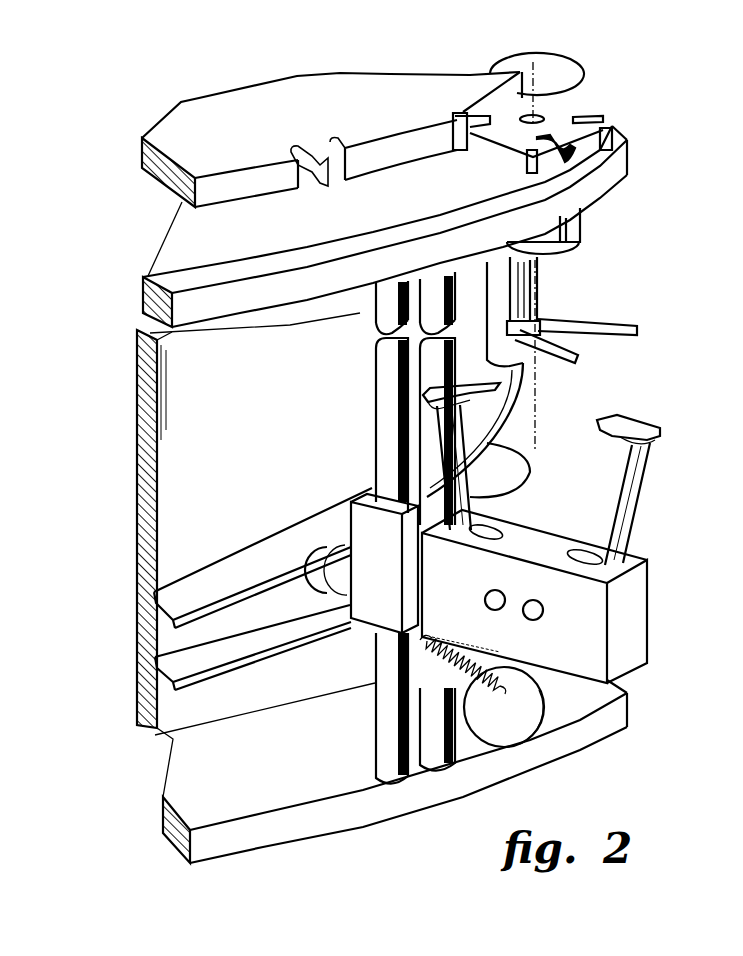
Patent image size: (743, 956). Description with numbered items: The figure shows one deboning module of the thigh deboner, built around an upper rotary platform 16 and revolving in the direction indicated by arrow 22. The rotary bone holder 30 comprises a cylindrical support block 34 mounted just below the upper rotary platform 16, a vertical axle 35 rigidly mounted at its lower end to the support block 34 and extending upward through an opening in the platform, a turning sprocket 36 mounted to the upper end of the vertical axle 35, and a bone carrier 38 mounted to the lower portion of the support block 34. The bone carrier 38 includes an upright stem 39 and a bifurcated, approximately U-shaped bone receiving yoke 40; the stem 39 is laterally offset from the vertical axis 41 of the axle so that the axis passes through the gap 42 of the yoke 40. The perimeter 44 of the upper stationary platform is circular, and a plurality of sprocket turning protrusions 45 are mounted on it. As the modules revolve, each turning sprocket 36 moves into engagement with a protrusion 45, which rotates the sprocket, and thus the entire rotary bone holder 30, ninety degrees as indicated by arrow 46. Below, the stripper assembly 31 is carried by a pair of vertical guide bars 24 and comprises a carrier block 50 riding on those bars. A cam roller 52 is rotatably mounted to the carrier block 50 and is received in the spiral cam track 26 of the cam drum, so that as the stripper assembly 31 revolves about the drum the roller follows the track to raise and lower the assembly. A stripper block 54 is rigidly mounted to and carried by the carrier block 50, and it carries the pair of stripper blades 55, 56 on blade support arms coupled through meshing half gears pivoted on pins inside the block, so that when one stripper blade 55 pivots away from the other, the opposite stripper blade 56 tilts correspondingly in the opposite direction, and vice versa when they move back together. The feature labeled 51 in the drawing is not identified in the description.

The upper rotary platform 16 is at (627, 170).
The arrow 22 is at (253, 373).
The vertical guide bars 24 is at (430, 407).
The spiral cam track 26 is at (200, 657).
The rotary bone holder 30 is at (584, 243).
The stripper assembly 31 is at (562, 482).
The cylindrical support block 34 is at (583, 220).
The vertical axle 35 is at (550, 107).
The turning sprocket 36 is at (490, 107).
The bone carrier 38 is at (552, 310).
The upright stem 39 is at (510, 300).
The bone receiving yoke 40 is at (602, 325).
The vertical axis 41 is at (538, 290).
The gap 42 is at (577, 343).
The perimeter 44 is at (267, 187).
The sprocket turning protrusions 45 is at (342, 187).
The arrow 46 is at (582, 72).
The carrier block 50 is at (373, 618).
The edge 51 is at (370, 497).
The cam roller 52 is at (330, 593).
The stripper block 54 is at (640, 598).
The stripper blade 55 is at (430, 387).
The stripper blade 56 is at (640, 423).